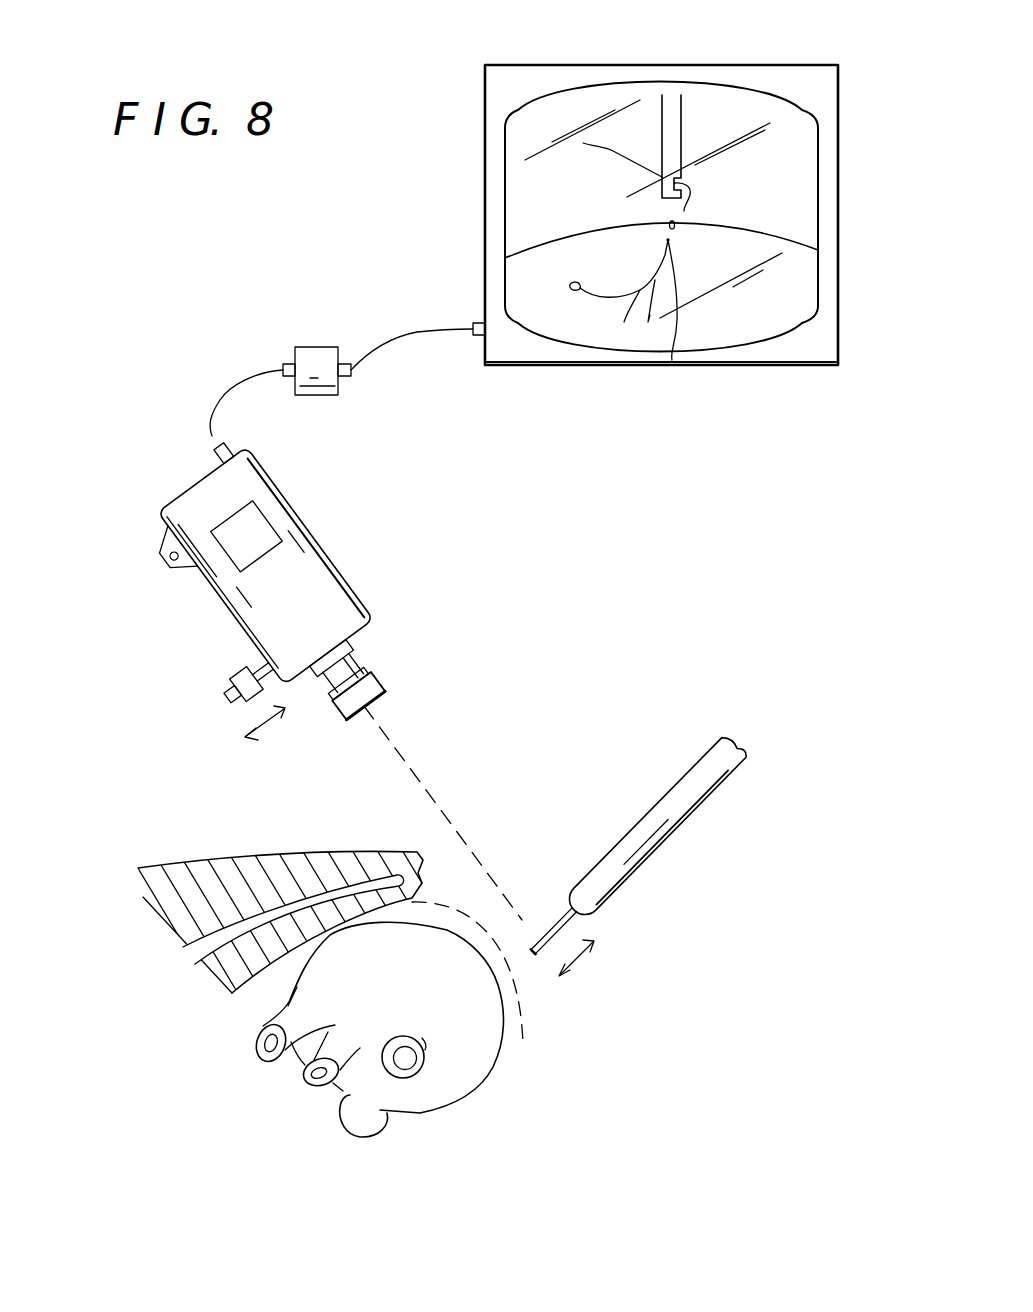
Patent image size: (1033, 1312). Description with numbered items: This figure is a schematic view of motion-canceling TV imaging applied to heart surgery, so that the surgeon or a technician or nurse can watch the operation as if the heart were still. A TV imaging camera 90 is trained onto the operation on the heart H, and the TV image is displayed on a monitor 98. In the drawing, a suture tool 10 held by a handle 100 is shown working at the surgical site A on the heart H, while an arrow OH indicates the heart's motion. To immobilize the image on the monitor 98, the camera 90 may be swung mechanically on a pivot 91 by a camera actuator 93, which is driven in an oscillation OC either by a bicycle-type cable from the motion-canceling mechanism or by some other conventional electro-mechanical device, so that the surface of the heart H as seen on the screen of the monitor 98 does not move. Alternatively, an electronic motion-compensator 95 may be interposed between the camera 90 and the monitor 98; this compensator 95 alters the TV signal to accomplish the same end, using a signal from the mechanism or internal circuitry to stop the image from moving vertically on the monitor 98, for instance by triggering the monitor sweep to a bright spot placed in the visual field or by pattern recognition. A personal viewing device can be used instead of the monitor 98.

The suture tool 10 is at (688, 118).
The TV imaging camera 90 is at (375, 620).
The pivot 91 is at (163, 573).
The camera actuator 93 is at (228, 681).
The electronic motion-compensator 95 is at (302, 348).
The monitor 98 is at (485, 122).
The tool handle 100 is at (665, 800).
The heart H is at (805, 277).
The anastomosis site A is at (668, 242).
The oscillation OC is at (273, 735).
The heart motion direction OH is at (589, 969).